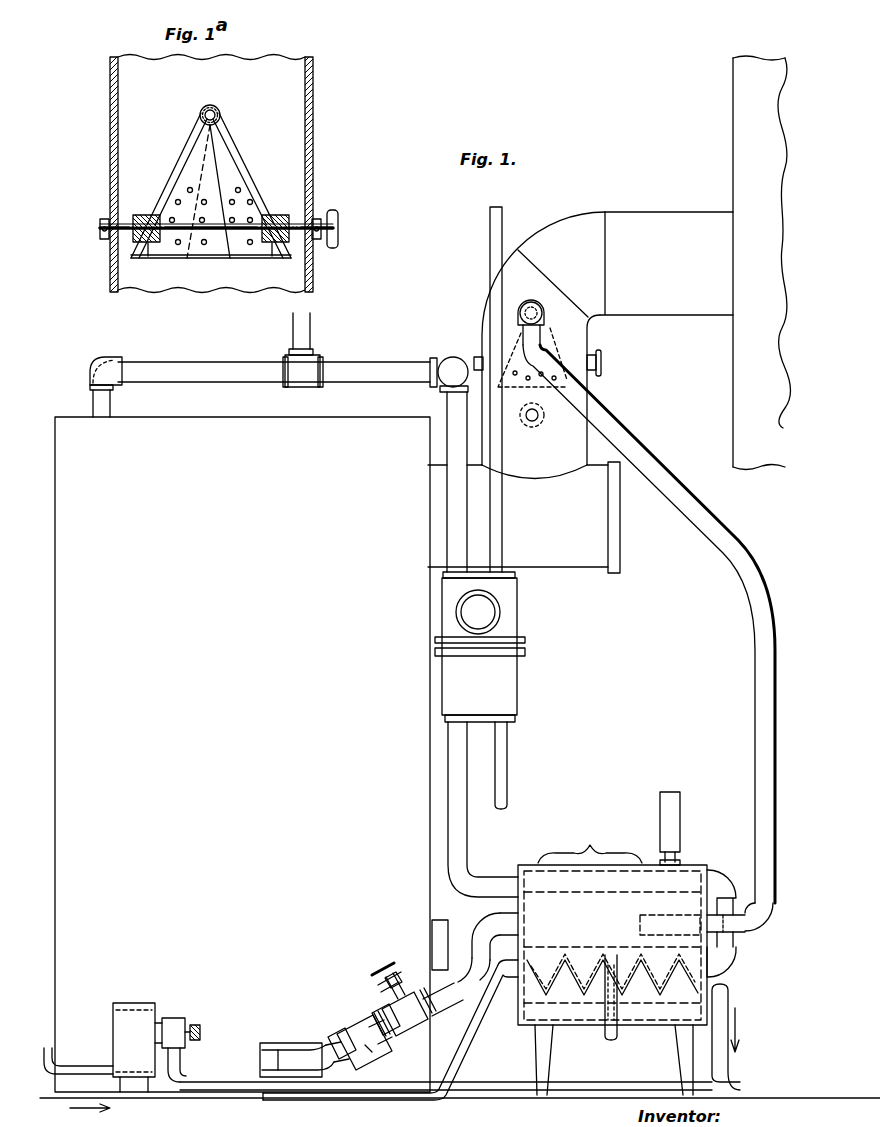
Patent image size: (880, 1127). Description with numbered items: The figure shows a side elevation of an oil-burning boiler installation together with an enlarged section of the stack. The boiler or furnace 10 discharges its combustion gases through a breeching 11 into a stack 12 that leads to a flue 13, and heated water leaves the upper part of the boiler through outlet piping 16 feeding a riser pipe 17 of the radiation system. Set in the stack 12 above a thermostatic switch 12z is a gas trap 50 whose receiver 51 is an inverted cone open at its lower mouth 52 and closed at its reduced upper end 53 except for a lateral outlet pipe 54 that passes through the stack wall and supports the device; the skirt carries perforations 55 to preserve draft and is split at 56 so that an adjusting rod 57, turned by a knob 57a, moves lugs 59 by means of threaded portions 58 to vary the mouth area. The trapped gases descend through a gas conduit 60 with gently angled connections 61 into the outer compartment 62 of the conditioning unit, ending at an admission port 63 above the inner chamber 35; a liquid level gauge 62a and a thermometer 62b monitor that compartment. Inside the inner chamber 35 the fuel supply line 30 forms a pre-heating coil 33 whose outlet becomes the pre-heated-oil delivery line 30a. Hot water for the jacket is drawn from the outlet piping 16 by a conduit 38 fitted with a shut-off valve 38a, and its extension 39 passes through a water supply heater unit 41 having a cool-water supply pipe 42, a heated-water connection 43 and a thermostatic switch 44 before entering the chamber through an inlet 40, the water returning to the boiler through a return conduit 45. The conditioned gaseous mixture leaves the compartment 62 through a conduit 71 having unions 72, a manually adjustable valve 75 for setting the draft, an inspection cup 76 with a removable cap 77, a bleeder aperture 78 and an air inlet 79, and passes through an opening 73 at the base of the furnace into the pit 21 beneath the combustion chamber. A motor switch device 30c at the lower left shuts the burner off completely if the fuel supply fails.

In FIG. 1, the boiler or furnace 10 is at (55, 548).
In FIG. 1, the breeching 11 is at (598, 563).
In FIG. 1A, the stack 12 is at (312, 125).
In FIG. 1, the stack 12 is at (637, 220).
In FIG. 1, the stack thermostatic switch 12z is at (533, 428).
In FIG. 1, the flue 13 is at (733, 94).
In FIG. 1, the outlet piping 16 is at (90, 400).
In FIG. 1, the riser pipe 17 is at (292, 327).
In FIG. 1, the pit 21 is at (292, 1050).
In FIG. 1, the oil feed line 30 is at (203, 1094).
In FIG. 1, the pre-heated-oil delivery line 30a is at (729, 1067).
In FIG. 1, the motor switch device 30c is at (170, 1018).
In FIG. 1, the coil 33 is at (612, 957).
In FIG. 1, the inner chamber or jacket 35 is at (556, 955).
In FIG. 1, the hot water conduit 38 is at (380, 372).
In FIG. 1, the shut-off valve 38a is at (452, 357).
In FIG. 1, the extension of hot water conduit 39 is at (722, 882).
In FIG. 1, the inlet 40 is at (716, 972).
In FIG. 1, the water supply heater unit 41 is at (532, 632).
In FIG. 1, the supply pipe 42 is at (508, 758).
In FIG. 1, the piping connection 43 is at (502, 222).
In FIG. 1, the thermostatic switch 44 is at (500, 605).
In FIG. 1, the return water conduit 45 is at (432, 937).
In FIG. 1A, the gas trap 50 is at (211, 186).
In FIG. 1, the gas trap 50 is at (552, 335).
In FIG. 1A, the receiver 51 is at (172, 166).
In FIG. 1A, the lower end or mouth 52 is at (172, 262).
In FIG. 1A, the upper end 53 is at (240, 144).
In FIG. 1A, the outlet pipe 54 is at (222, 110).
In FIG. 1A, the perforations 55 is at (208, 245).
In FIG. 1A, the split 56 is at (220, 172).
In FIG. 1A, the adjusting rod 57 is at (196, 240).
In FIG. 1, the adjusting rod 57 is at (480, 356).
In FIG. 1A, the manual adjusting knob 57a is at (338, 220).
In FIG. 1, the manual adjusting knob 57a is at (601, 363).
In FIG. 1A, the threaded portions 58 is at (150, 245).
In FIG. 1A, the lugs 59 is at (145, 215).
In FIG. 1, the gas conduit 60 is at (712, 563).
In FIG. 1, the piping connections 61 is at (544, 315).
In FIG. 1, the outer compartment 62 is at (641, 865).
In FIG. 1, the liquid level gauge 62a is at (618, 1032).
In FIG. 1, the thermometer 62b is at (680, 813).
In FIG. 1, the admission port 63 is at (664, 917).
In FIG. 1, the gas conduit 71 is at (509, 914).
In FIG. 1, the unions 72 is at (483, 921).
In FIG. 1, the opening 73 is at (260, 1047).
In FIG. 1, the manually adjustable valve 75 is at (412, 992).
In FIG. 1, the cup or trap 76 is at (368, 1046).
In FIG. 1, the cap 77 is at (356, 1024).
In FIG. 1, the bleeder aperture 78 is at (285, 1093).
In FIG. 1, the air inlet 79 is at (278, 1050).